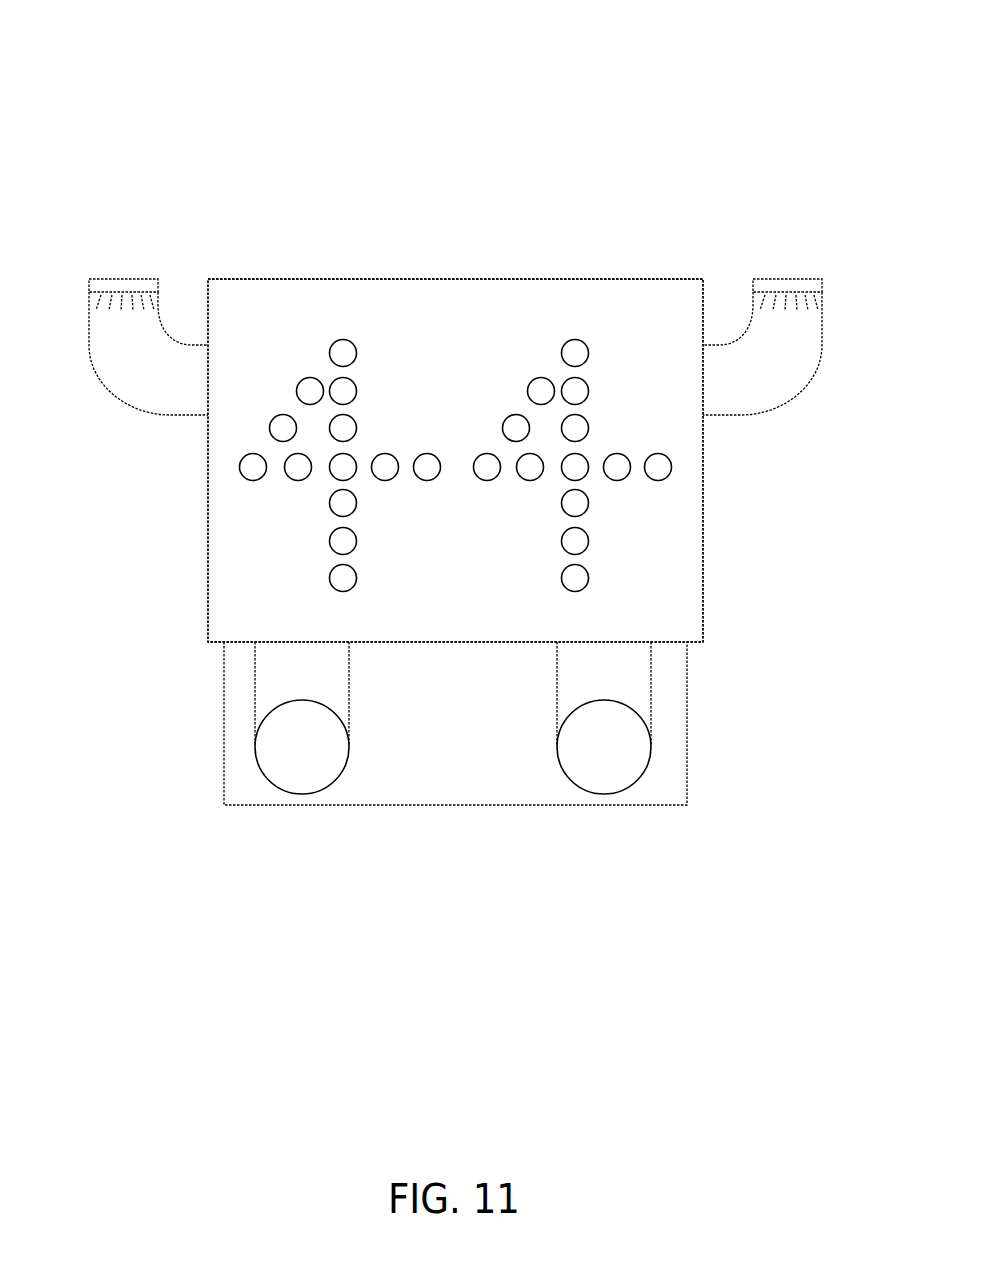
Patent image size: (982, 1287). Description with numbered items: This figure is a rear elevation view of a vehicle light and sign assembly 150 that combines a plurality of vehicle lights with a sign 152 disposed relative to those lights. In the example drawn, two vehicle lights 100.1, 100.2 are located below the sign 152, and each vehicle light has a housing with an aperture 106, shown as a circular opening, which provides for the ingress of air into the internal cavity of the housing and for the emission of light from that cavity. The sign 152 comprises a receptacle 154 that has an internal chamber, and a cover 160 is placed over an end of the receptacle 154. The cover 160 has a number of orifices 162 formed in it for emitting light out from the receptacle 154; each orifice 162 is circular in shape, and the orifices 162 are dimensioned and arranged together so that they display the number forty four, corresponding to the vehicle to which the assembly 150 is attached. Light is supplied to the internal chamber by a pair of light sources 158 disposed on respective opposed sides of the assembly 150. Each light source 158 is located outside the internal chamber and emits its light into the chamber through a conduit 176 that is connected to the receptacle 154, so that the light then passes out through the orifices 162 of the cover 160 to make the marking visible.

The vehicle light and sign assembly 150 is at (477, 136).
The sign 152 is at (643, 318).
The receptacle 154 is at (304, 297).
The light source 158 is at (125, 283).
The conduit 176 is at (148, 375).
The cover 160 is at (487, 555).
The orifice 162 is at (657, 463).
The vehicle light 100.1 is at (285, 660).
The vehicle light 100.2 is at (633, 670).
The aperture 106 is at (298, 744).